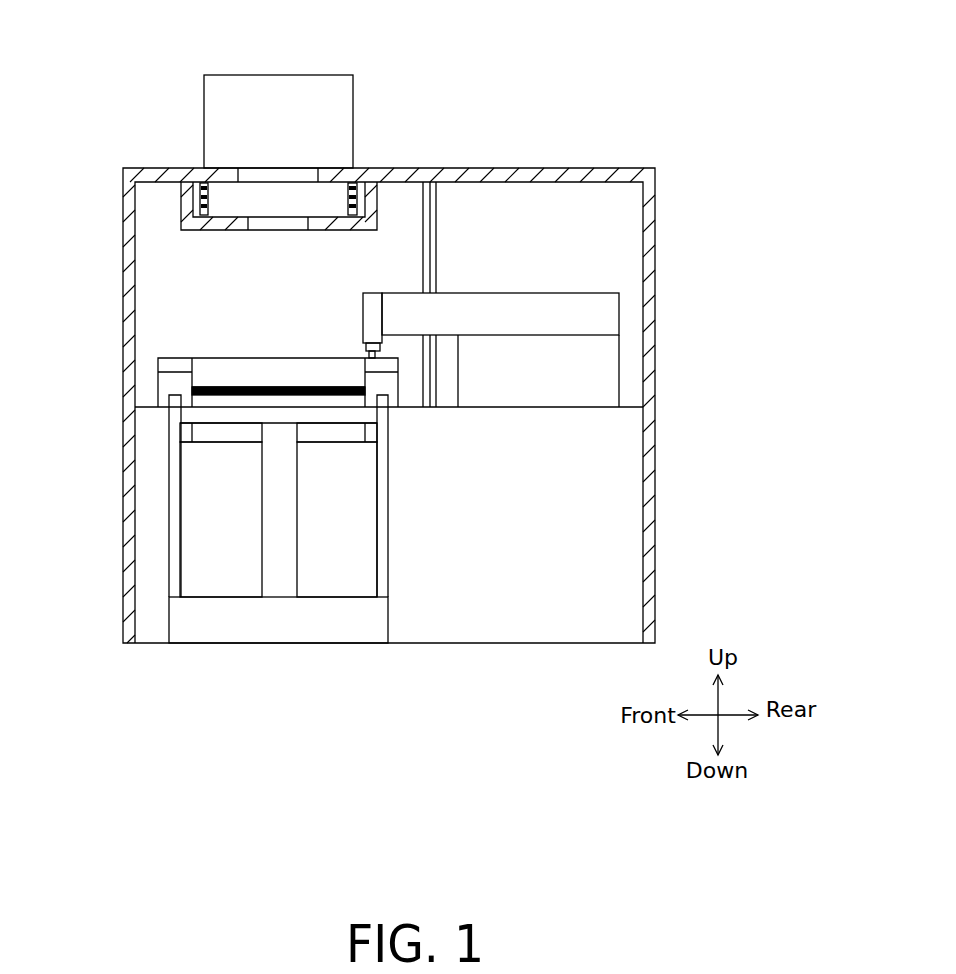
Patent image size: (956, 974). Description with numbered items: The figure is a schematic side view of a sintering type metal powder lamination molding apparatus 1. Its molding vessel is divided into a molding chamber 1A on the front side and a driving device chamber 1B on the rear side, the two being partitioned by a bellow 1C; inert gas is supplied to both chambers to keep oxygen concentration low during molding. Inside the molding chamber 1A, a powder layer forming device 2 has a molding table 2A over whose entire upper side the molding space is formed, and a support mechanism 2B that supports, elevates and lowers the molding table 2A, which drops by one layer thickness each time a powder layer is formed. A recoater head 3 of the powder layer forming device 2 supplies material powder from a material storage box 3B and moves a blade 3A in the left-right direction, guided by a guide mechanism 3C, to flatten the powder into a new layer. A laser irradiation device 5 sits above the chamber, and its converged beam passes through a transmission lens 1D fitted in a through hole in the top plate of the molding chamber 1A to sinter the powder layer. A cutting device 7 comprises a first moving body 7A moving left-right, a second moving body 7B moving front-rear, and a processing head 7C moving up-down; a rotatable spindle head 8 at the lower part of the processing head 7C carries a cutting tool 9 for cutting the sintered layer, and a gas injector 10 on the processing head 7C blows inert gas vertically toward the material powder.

The lamination molding apparatus 1 is at (645, 143).
The molding chamber 1A is at (159, 207).
The driving device chamber 1B is at (618, 218).
The bellow 1C is at (433, 235).
The transmission lens 1D is at (282, 176).
The laser irradiation device 5 is at (237, 88).
The cutting device 7 is at (507, 280).
The first moving body 7A is at (612, 365).
The second moving body 7B is at (612, 317).
The processing head 7C is at (369, 302).
The spindle head 8 is at (380, 350).
The cutting tool 9 is at (367, 356).
The gas injector 10 is at (365, 347).
The recoater head 3 is at (168, 348).
The blade 3A is at (223, 400).
The material storage box 3B is at (212, 372).
The guide mechanism 3C is at (168, 387).
The powder layer forming device 2 is at (243, 457).
The molding table 2A is at (187, 413).
The support mechanism 2B is at (208, 440).